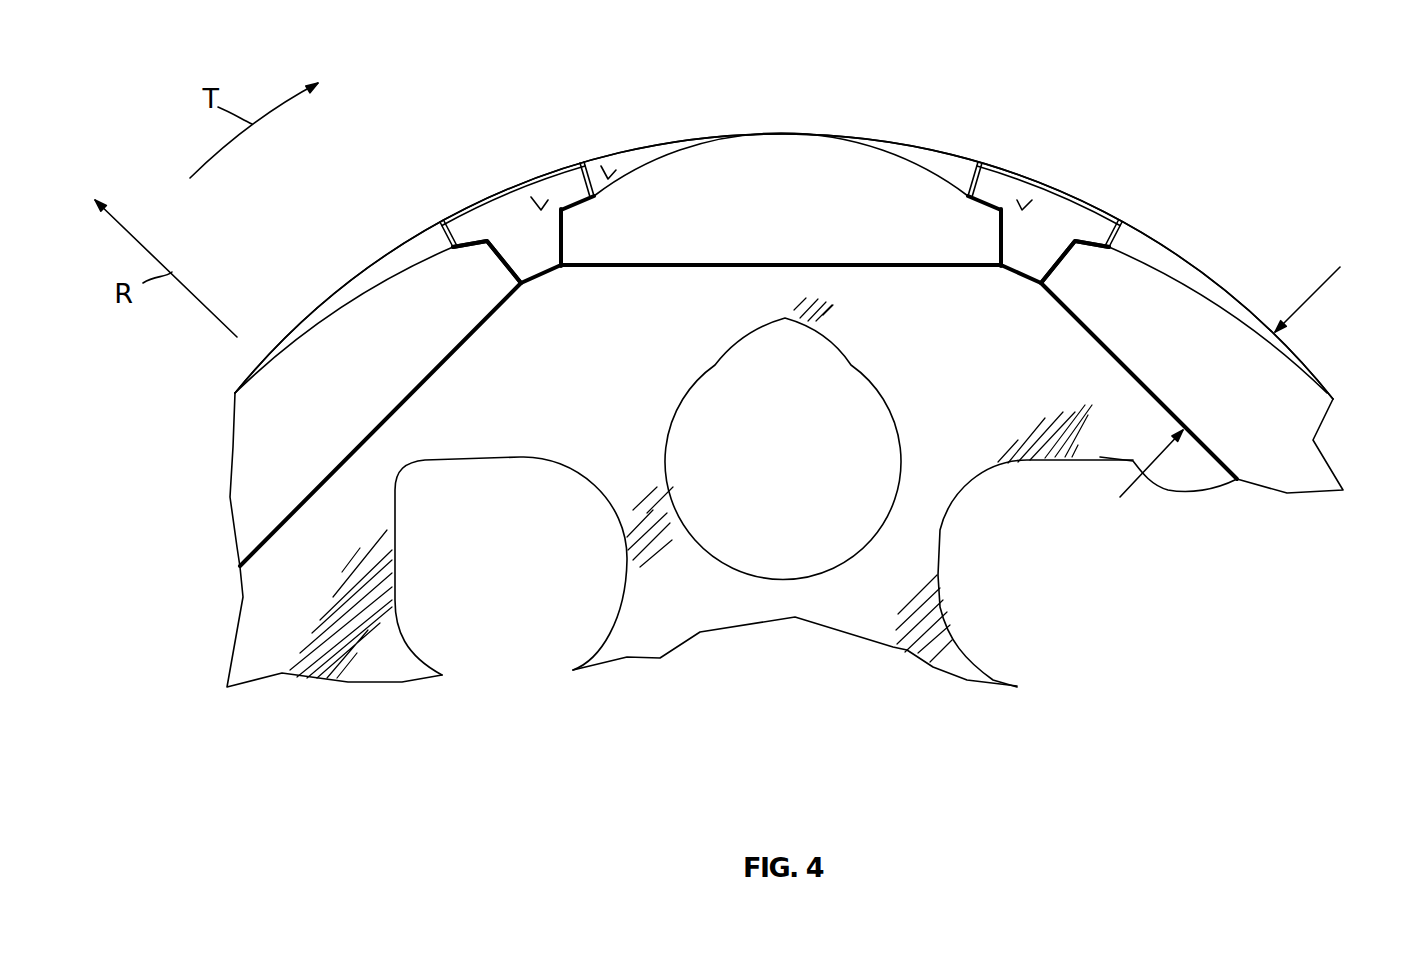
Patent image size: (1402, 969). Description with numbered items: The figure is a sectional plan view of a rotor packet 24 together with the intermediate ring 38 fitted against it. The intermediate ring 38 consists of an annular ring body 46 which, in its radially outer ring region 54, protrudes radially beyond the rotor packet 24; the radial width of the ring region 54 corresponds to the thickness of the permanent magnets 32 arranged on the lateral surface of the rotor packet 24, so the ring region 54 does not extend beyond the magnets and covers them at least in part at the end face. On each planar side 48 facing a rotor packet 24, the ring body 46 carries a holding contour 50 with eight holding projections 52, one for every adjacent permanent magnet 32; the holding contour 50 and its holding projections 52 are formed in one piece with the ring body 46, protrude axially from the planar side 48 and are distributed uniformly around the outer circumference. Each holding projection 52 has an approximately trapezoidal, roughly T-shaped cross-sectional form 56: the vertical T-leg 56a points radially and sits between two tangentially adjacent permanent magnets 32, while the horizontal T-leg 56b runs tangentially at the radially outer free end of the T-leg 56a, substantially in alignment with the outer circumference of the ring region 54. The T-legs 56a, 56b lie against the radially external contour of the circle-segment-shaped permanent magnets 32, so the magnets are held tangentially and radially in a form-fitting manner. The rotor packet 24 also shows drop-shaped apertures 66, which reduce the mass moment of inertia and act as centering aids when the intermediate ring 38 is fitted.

The rotor packet 24 is at (807, 593).
The permanent magnet 32 is at (797, 184).
The intermediate ring 38 is at (1173, 255).
The ring body 46 is at (1173, 255).
The planar side 48 is at (613, 158).
The holding contour 50 is at (1107, 126).
The holding projection 52 is at (497, 220).
The ring region 54 is at (1322, 288).
The cross-sectional form 56 is at (543, 211).
The vertical T-leg 56a is at (533, 250).
The horizontal T-leg 56b is at (476, 231).
The aperture 66 is at (477, 590).